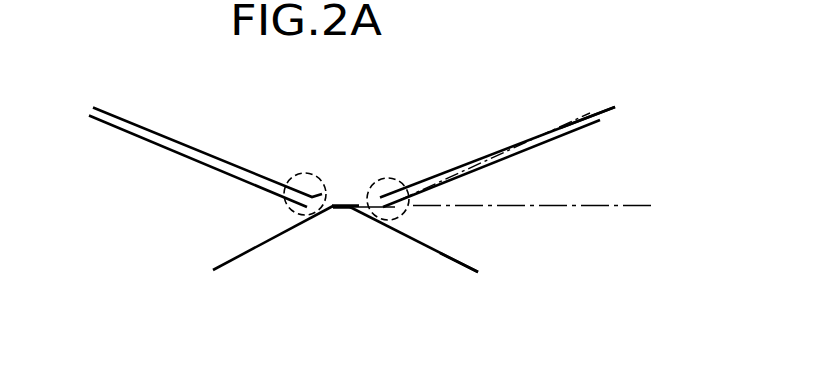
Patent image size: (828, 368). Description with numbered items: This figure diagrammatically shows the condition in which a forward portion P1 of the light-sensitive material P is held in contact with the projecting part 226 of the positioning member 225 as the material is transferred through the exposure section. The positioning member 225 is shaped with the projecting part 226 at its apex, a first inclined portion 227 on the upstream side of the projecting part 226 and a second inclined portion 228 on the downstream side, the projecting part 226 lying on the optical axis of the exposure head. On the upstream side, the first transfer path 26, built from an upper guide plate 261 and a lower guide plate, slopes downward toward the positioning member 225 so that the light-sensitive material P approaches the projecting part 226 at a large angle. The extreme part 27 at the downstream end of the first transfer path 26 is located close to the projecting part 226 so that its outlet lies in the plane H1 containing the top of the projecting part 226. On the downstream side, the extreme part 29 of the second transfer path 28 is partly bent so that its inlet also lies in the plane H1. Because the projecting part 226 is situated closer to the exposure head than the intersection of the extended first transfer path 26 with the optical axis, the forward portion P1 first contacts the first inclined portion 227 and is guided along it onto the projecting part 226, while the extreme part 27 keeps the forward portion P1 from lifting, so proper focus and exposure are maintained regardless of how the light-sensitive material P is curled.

The second transfer path 28 is at (215, 157).
The extreme part of the upstream terminal portion 29 is at (300, 172).
The extreme part of the downstream terminal portion 27 is at (395, 178).
The forward portion of the light-sensitive material P1 is at (347, 206).
The first transfer path 26 is at (562, 121).
The upper guide plate 261 is at (513, 143).
The light-sensitive material P is at (607, 112).
The plane containing the projecting part H1 is at (558, 209).
The second inclined portion 228 is at (262, 247).
The projecting part 226 is at (347, 210).
The first inclined portion 227 is at (423, 248).
The positioning member 225 is at (460, 266).